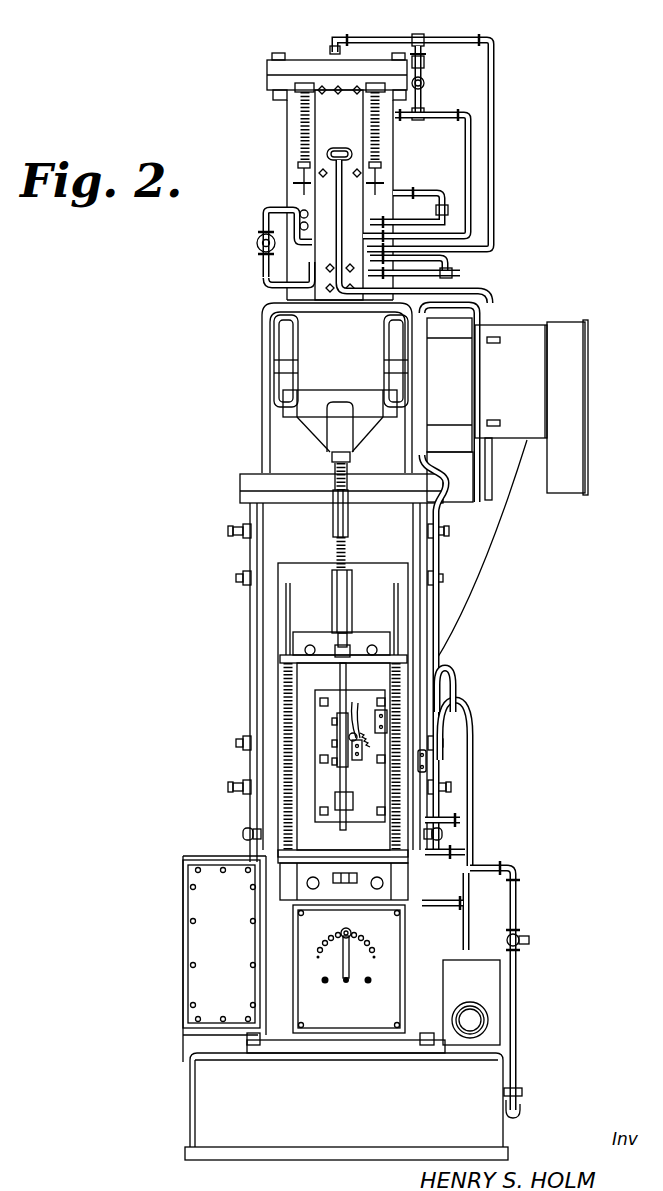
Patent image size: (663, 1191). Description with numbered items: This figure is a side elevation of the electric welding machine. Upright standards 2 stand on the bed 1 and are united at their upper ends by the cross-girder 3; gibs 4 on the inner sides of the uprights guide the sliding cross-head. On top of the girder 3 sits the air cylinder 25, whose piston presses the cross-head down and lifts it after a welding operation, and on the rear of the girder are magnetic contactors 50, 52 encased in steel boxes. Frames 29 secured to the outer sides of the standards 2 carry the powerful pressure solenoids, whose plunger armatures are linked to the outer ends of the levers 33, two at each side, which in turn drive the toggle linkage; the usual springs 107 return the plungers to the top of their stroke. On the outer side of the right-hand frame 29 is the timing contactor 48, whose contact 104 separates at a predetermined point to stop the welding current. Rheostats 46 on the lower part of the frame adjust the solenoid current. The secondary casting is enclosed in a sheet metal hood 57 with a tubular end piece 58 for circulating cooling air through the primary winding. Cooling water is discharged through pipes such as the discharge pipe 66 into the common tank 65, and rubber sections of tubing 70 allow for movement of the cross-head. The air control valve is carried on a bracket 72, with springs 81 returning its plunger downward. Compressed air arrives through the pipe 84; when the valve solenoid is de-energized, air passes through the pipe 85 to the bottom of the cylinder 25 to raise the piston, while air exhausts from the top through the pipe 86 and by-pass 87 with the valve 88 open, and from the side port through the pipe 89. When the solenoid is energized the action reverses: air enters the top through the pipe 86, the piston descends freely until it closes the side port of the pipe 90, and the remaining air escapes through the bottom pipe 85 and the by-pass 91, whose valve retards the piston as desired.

The bed 1 is at (346, 1100).
The upright standards 2 is at (354, 677).
The cross-girder 3 is at (358, 403).
The gibs 4 is at (338, 70).
The air cylinder 25 is at (288, 113).
The frames 29 is at (284, 682).
The levers 33 is at (392, 349).
The rheostats 46 is at (349, 969).
The timing contactor 48 is at (348, 763).
The magnetic contactor 50 is at (511, 491).
The magnetic contactor 52 is at (352, 527).
The sheet metal hood 57 is at (505, 860).
The tubular end piece 58 is at (221, 944).
The tank 65 is at (471, 1002).
The discharge pipe 66 is at (466, 946).
The sections of tubing 70 is at (470, 751).
The bracket 72 is at (402, 194).
The springs 81 is at (300, 143).
The compressed air pipe 84 is at (260, 247).
The pipe 85 is at (407, 283).
The pipe 86 is at (333, 42).
The by-pass 87 is at (424, 60).
The valve 88 is at (425, 83).
The pipe 89 is at (400, 118).
The pipe 90 is at (397, 190).
The by-pass 91 is at (440, 198).
The contact 104 is at (376, 695).
The springs 107 is at (290, 710).